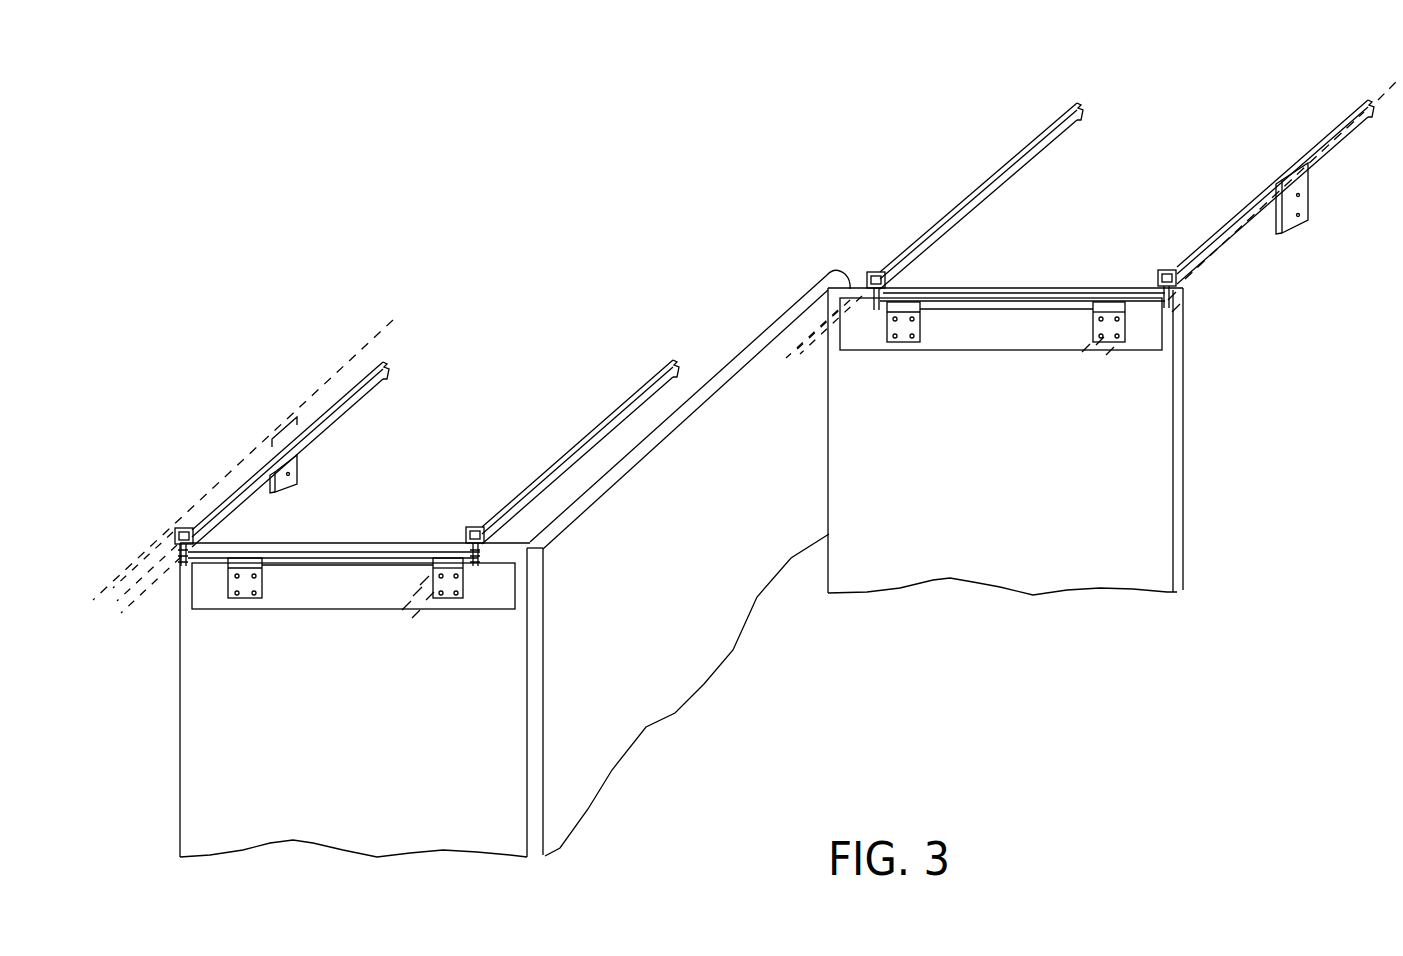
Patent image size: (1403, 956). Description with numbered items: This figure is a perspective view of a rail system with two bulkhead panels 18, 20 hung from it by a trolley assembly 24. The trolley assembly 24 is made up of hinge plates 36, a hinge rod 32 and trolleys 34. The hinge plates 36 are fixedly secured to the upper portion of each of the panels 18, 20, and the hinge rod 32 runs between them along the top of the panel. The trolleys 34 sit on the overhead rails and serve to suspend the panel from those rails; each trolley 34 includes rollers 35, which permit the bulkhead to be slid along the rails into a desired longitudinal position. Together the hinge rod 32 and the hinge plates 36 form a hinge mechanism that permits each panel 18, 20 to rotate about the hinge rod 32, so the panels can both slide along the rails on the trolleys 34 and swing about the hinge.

The panel 18 is at (310, 813).
The panel 20 is at (992, 548).
The trolley assembly 24 is at (190, 552).
The hinge rod 32 is at (385, 563).
The trolley 34 is at (463, 548).
The roller 35 is at (472, 527).
The hinge plate 36 is at (248, 588).